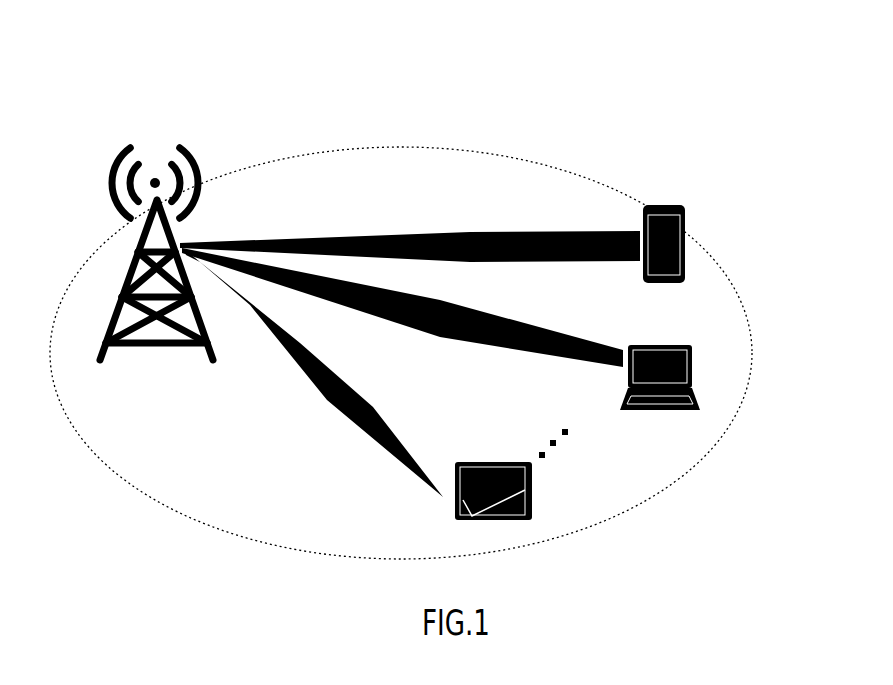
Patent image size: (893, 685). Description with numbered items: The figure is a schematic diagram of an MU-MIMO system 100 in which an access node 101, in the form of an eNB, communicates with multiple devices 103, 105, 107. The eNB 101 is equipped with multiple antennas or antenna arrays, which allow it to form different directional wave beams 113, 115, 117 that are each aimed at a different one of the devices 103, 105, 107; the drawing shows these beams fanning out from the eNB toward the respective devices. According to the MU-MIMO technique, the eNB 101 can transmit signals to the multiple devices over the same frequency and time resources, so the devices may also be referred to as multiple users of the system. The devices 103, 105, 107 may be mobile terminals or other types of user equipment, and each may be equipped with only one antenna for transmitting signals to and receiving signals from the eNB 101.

The wireless communication system 100 is at (392, 283).
The access node 101 is at (197, 160).
The device 103 is at (687, 207).
The device 105 is at (700, 352).
The device 107 is at (543, 493).
The directional wave beam 113 is at (365, 227).
The directional wave beam 115 is at (533, 322).
The directional wave beam 117 is at (373, 407).